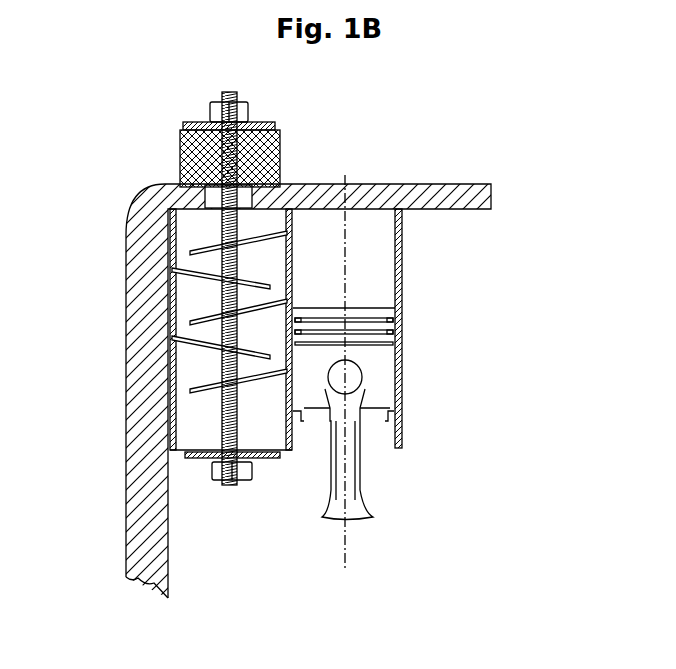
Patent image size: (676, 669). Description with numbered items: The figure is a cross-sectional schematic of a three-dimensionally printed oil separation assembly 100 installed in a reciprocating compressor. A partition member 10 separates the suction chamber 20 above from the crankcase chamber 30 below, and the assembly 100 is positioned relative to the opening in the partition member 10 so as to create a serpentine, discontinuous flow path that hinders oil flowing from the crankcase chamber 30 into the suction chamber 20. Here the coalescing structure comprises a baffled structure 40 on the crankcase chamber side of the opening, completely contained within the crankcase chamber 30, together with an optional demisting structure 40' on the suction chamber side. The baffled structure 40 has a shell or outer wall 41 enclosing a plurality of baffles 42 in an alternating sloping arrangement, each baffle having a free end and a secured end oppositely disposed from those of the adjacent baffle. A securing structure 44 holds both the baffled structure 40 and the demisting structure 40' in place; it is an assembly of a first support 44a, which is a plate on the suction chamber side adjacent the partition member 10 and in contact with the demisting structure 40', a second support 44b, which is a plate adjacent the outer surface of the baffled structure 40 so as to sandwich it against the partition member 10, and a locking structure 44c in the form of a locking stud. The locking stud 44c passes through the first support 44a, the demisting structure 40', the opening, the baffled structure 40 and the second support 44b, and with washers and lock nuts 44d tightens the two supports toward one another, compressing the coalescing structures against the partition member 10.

The partition member 10 is at (445, 184).
The suction chamber 20 is at (403, 151).
The crankcase chamber 30 is at (282, 563).
The baffled structure 40 is at (265, 292).
The demisting structure 40' is at (302, 158).
The outer wall 41 is at (283, 248).
The baffles 42 is at (182, 267).
The securing structure 44 is at (201, 292).
The first support 44a is at (184, 125).
The second support 44b is at (188, 460).
The locking stud 44c is at (245, 331).
The lock nuts 44d is at (249, 110).
The 3D-printed oil separation assembly 100 is at (332, 108).